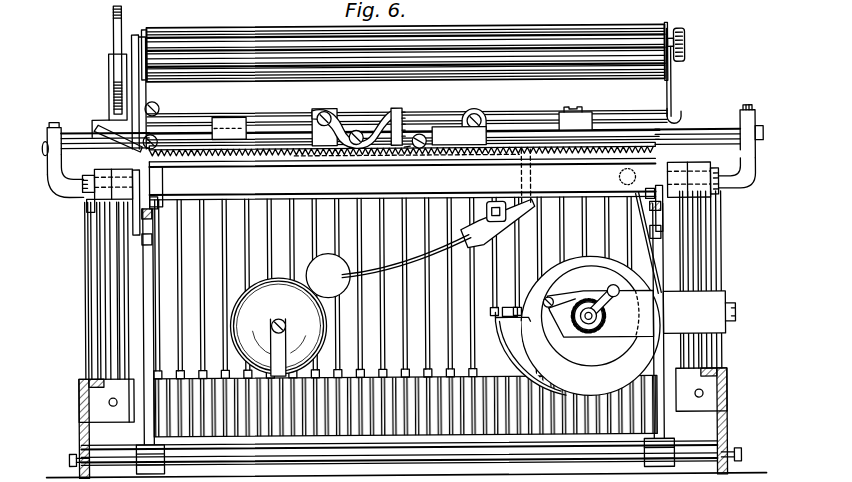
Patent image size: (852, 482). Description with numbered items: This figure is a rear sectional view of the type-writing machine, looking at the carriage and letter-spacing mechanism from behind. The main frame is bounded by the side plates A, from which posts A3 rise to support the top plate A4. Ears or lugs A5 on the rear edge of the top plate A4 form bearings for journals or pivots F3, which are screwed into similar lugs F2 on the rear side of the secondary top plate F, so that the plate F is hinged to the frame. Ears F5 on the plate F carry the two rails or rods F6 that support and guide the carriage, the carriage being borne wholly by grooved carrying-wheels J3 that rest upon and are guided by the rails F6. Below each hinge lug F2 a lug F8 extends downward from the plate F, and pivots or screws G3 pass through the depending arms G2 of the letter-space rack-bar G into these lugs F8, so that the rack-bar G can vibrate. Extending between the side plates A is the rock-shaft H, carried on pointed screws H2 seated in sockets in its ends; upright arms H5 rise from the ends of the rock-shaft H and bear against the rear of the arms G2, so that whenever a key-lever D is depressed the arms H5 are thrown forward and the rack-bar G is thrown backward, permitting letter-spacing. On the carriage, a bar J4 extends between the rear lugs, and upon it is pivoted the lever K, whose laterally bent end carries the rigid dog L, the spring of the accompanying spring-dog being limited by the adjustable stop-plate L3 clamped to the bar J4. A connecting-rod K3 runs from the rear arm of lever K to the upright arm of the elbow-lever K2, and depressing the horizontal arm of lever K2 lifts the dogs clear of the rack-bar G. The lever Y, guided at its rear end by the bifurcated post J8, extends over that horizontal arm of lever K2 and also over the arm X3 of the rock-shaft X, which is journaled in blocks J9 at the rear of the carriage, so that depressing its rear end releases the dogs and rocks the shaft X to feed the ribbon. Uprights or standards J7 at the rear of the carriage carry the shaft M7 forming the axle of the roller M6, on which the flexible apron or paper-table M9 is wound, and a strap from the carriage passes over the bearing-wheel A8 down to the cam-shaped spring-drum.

The lever Y is at (108, 60).
The bifurcated post J8 is at (111, 103).
The elbow-lever K2 is at (117, 136).
The connecting-rod K3 is at (313, 112).
The grooved carrying-wheel J3 is at (331, 116).
The lever K is at (389, 126).
The rigid dog L is at (405, 148).
The adjustable stop-plate L3 is at (420, 134).
The bar J4 is at (459, 136).
The blocks J9 is at (233, 116).
The roller M6 is at (404, 53).
The flexible apron or paper-table M9 is at (552, 102).
The rock-shaft X is at (407, 114).
The rod or shaft M7 is at (686, 46).
The uprights or standards J7 is at (673, 79).
The arm X3 is at (686, 116).
The rails or rods F6 is at (696, 132).
The ears F5 is at (48, 163).
The ears or lugs A5 is at (400, 171).
The ears or lugs F2 is at (402, 173).
The journals or pivots F3 is at (88, 191).
The lug F8 is at (142, 223).
The depending arms G2 is at (141, 245).
The pivots or screws G3 is at (159, 197).
The letter-space rack-bar G is at (266, 150).
The secondary top plate F is at (402, 182).
The top plate A4 is at (394, 286).
The roller or bearing-wheel A8 is at (619, 178).
The post A3 is at (90, 300).
The upright arm H5 is at (404, 338).
The side plates A is at (78, 408).
The pointed screws H2 is at (68, 458).
The key-levers D is at (405, 406).
The rocking bar or rock-shaft H is at (406, 457).